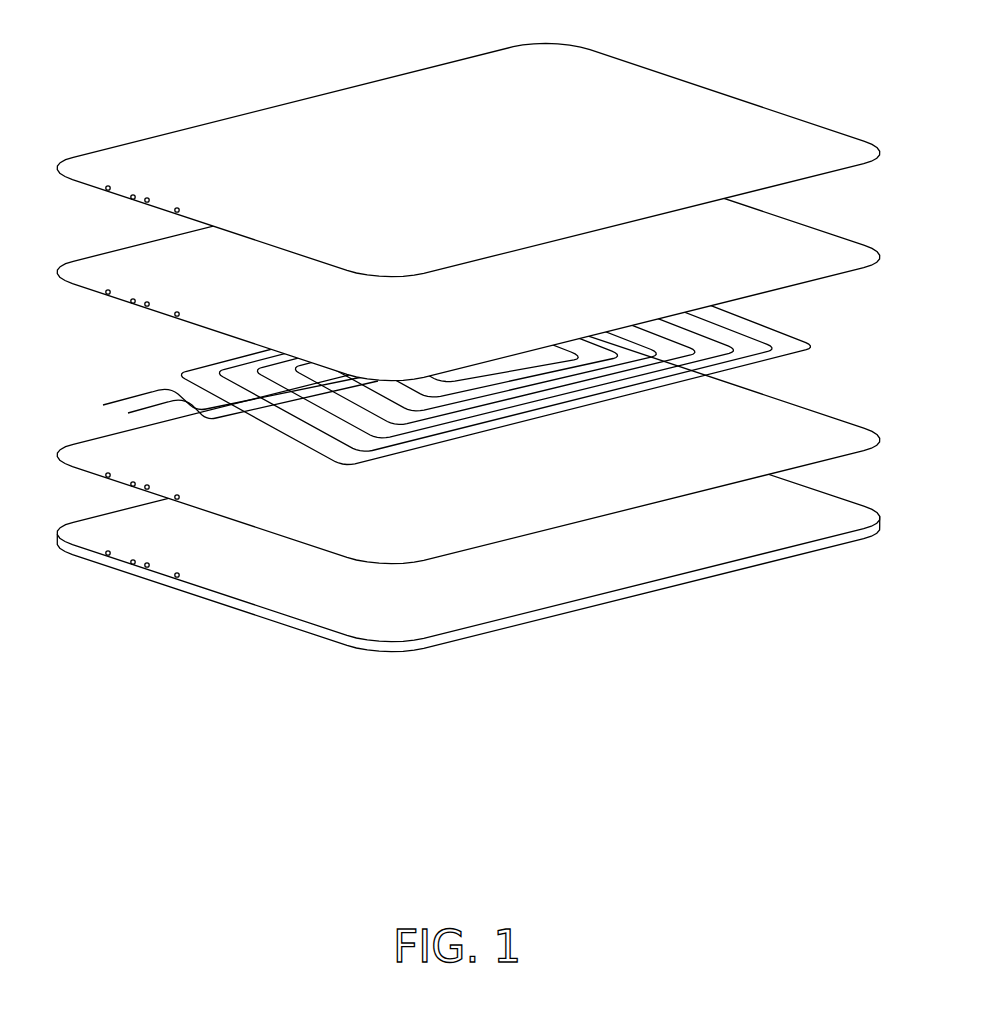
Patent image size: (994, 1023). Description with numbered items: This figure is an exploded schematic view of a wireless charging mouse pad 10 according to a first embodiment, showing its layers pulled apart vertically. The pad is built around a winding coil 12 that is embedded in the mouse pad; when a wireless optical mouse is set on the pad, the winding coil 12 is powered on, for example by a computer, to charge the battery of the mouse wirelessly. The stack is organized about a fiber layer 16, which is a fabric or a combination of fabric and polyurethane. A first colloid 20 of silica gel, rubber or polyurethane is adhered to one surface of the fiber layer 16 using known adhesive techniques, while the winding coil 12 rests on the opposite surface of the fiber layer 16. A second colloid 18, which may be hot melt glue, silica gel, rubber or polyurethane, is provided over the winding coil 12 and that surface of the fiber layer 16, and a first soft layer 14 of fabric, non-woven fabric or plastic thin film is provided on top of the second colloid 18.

The wireless charging mouse pad 10 is at (747, 711).
The winding coil 12 is at (137, 397).
The first soft layer 14 is at (320, 107).
The fiber layer 16 is at (240, 513).
The second colloid 18 is at (813, 265).
The first colloid 20 is at (303, 603).